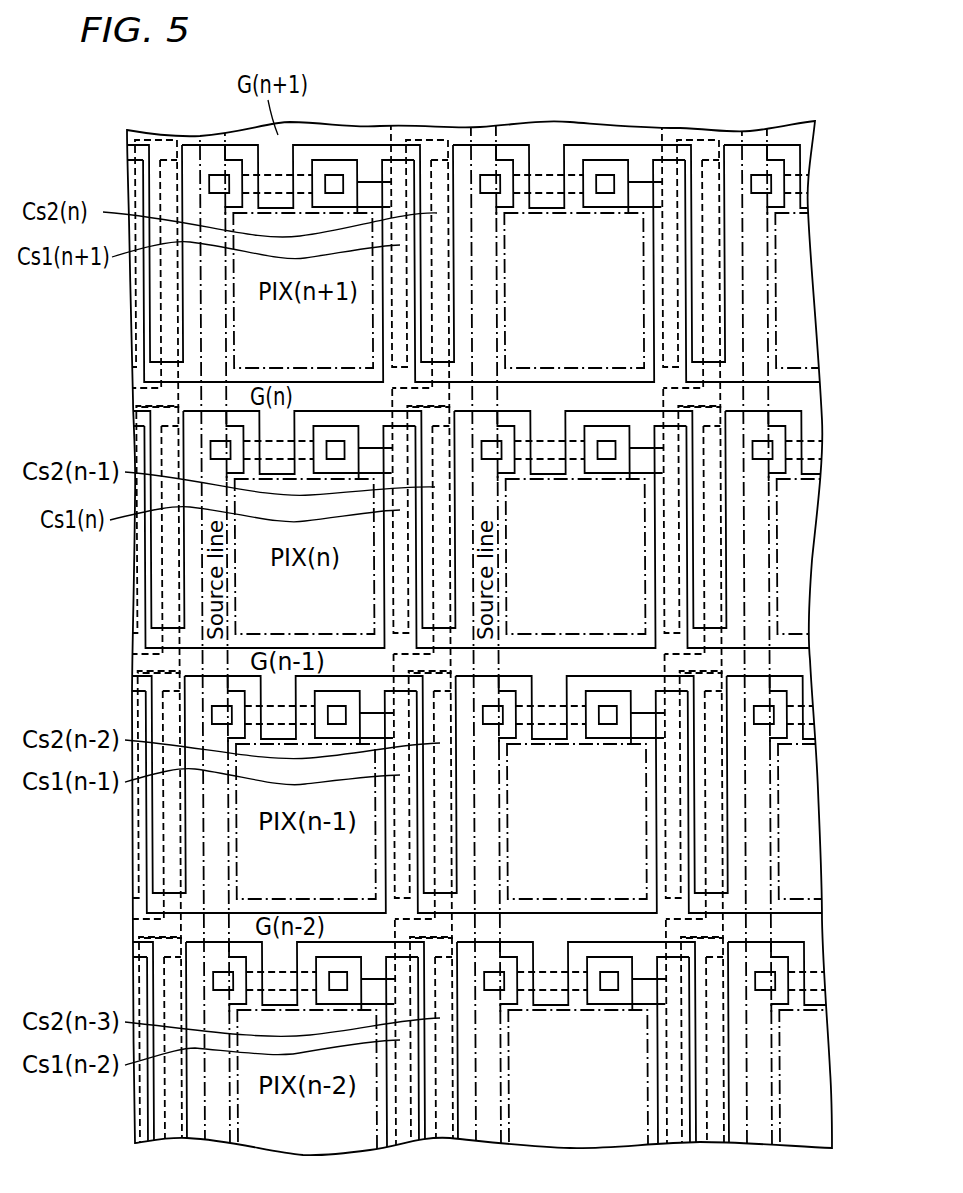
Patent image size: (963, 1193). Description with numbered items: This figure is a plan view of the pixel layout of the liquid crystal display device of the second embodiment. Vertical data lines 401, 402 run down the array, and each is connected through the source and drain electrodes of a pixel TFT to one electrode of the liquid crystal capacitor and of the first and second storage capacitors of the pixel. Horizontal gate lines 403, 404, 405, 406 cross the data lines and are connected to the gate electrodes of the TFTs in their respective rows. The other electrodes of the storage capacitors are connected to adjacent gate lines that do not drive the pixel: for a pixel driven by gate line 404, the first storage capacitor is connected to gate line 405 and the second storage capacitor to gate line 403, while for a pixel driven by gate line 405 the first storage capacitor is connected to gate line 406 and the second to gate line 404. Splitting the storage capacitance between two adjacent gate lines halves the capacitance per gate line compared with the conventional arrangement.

The data line 401 is at (212, 135).
The data line 402 is at (483, 135).
The gate line 403 is at (126, 133).
The gate line 404 is at (145, 400).
The gate line 405 is at (145, 668).
The gate line 406 is at (145, 933).